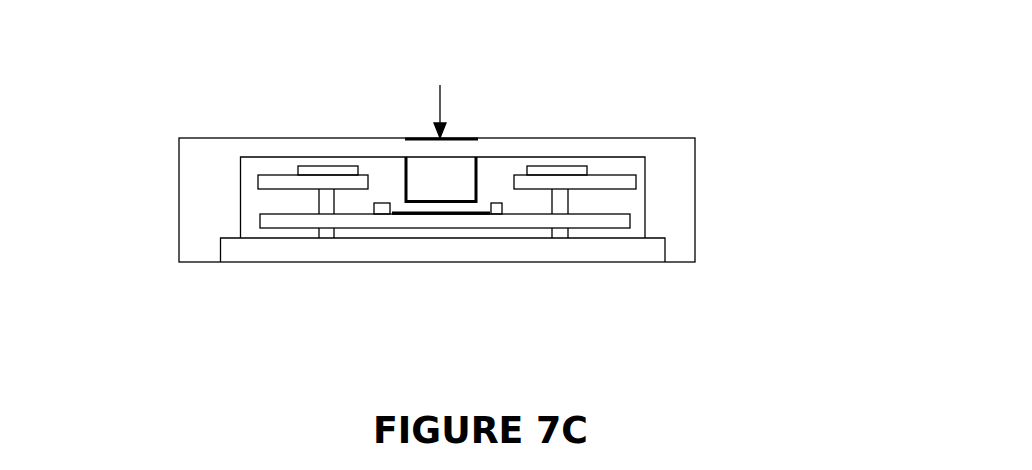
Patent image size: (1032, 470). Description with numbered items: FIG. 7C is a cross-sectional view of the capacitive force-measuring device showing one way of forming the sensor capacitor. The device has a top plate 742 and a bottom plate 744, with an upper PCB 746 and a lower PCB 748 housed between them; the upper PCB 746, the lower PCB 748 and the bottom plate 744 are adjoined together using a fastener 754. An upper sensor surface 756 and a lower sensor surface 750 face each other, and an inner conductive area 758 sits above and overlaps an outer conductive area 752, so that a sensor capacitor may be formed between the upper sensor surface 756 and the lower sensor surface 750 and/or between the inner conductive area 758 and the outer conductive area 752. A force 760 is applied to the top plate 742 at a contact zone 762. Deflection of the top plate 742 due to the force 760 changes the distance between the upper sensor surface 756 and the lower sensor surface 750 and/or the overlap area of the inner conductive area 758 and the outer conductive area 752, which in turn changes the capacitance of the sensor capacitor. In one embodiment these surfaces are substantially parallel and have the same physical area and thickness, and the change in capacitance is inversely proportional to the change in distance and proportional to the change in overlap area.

The top plate 742 is at (687, 167).
The bottom plate 744 is at (233, 249).
The upper PCB 746 is at (268, 181).
The lower PCB 748 is at (267, 220).
The lower sensor surface 750 is at (473, 213).
The outer conductive area 752 is at (490, 212).
The fastener 754 is at (328, 230).
The upper sensor surface 756 is at (477, 201).
The inner conductive area 758 is at (477, 183).
The force 760 is at (440, 103).
The contact zone 762 is at (455, 138).